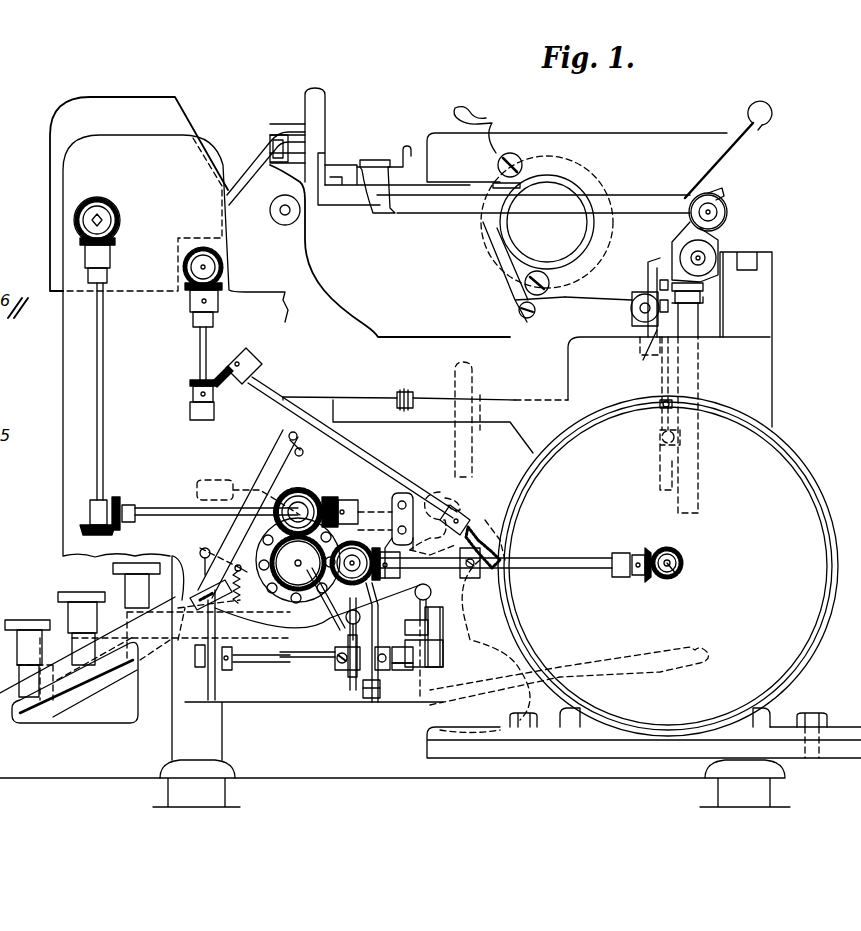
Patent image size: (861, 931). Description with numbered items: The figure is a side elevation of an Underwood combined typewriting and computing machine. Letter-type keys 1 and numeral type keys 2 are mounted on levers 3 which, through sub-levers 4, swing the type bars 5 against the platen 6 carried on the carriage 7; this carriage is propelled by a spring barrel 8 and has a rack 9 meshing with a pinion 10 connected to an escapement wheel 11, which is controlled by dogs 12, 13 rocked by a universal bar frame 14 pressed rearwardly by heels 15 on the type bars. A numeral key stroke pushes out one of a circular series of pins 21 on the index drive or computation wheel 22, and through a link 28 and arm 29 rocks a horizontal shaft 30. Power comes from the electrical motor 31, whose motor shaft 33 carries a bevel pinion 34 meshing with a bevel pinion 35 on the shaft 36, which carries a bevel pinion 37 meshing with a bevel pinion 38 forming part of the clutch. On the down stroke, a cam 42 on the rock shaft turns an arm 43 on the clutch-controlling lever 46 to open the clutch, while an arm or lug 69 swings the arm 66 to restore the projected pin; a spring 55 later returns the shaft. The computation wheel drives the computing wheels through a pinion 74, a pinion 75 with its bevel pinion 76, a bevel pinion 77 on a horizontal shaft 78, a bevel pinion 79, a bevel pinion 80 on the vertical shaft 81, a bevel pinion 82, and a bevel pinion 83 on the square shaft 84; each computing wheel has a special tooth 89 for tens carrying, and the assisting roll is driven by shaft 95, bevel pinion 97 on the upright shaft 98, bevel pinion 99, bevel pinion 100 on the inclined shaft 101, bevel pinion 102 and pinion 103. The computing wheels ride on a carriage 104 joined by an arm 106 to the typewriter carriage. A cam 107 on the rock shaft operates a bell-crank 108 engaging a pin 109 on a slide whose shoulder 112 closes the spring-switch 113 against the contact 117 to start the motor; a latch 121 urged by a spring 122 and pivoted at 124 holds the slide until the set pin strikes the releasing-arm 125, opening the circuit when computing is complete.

The letter-type keys 1 is at (62, 598).
The numeral type keys 2 is at (136, 585).
The levers 3 is at (145, 660).
The sub-levers 4 is at (564, 646).
The type bars 5 is at (240, 500).
The platen 6 is at (486, 240).
The carriage 7 is at (342, 200).
The spring barrel 8 is at (698, 395).
The rack 9 is at (630, 306).
The pinion 10 is at (642, 352).
The escapement wheel 11 is at (659, 297).
The dog 12 is at (658, 408).
The dog 13 is at (672, 406).
The universal bar frame 14 is at (472, 392).
The heels 15 is at (450, 495).
The pins 21 is at (266, 584).
The index drive or computation wheel 22 is at (318, 599).
The link 28 is at (413, 609).
The arm 29 is at (432, 612).
The horizontal shaft 30 is at (258, 663).
The electrical motor 31 is at (668, 566).
The motor shaft 33 is at (678, 578).
The bevel pinion 34 is at (676, 553).
The bevel pinion 35 is at (650, 582).
The shaft 36 is at (535, 562).
The bevel pinion 37 is at (372, 575).
The bevel pinion 38 is at (378, 518).
The cam 42 is at (382, 648).
The arm 43 is at (383, 689).
The clutch-controlling lever 46 is at (376, 612).
The spring 55 is at (403, 652).
The arm 66 is at (360, 618).
The arm or lug 69 is at (350, 678).
The pinion 74 is at (298, 563).
The pinion 75 is at (288, 492).
The bevel pinion 76 is at (200, 258).
The bevel pinion 77 is at (326, 503).
The horizontal shaft 78 is at (158, 508).
The bevel pinion 79 is at (117, 497).
The bevel pinion 80 is at (90, 516).
The vertical shaft 81 is at (104, 383).
The bevel pinion 82 is at (110, 250).
The bevel pinion 83 is at (112, 218).
The square shaft 84 is at (97, 214).
The special tooth 89 is at (372, 530).
The shaft 95 is at (205, 267).
The bevel pinion 97 is at (190, 296).
The upright shaft 98 is at (200, 340).
The bevel pinion 99 is at (190, 383).
The bevel pinion 100 is at (245, 348).
The inclined shaft 101 is at (278, 392).
The bevel pinion 102 is at (486, 520).
The pinion 103 is at (474, 580).
The carriage 104 is at (139, 194).
The arm 106 is at (240, 150).
The cam 107 is at (229, 649).
The bell-crank 108 is at (205, 665).
The pin 109 is at (208, 610).
The shoulder 112 is at (204, 560).
The electrical spring-switch or contact 113 is at (247, 559).
The contact 117 is at (218, 560).
The latch 121 is at (258, 612).
The spring 122 is at (249, 595).
The pivot 124 is at (335, 660).
The releasing-arm 125 is at (314, 643).